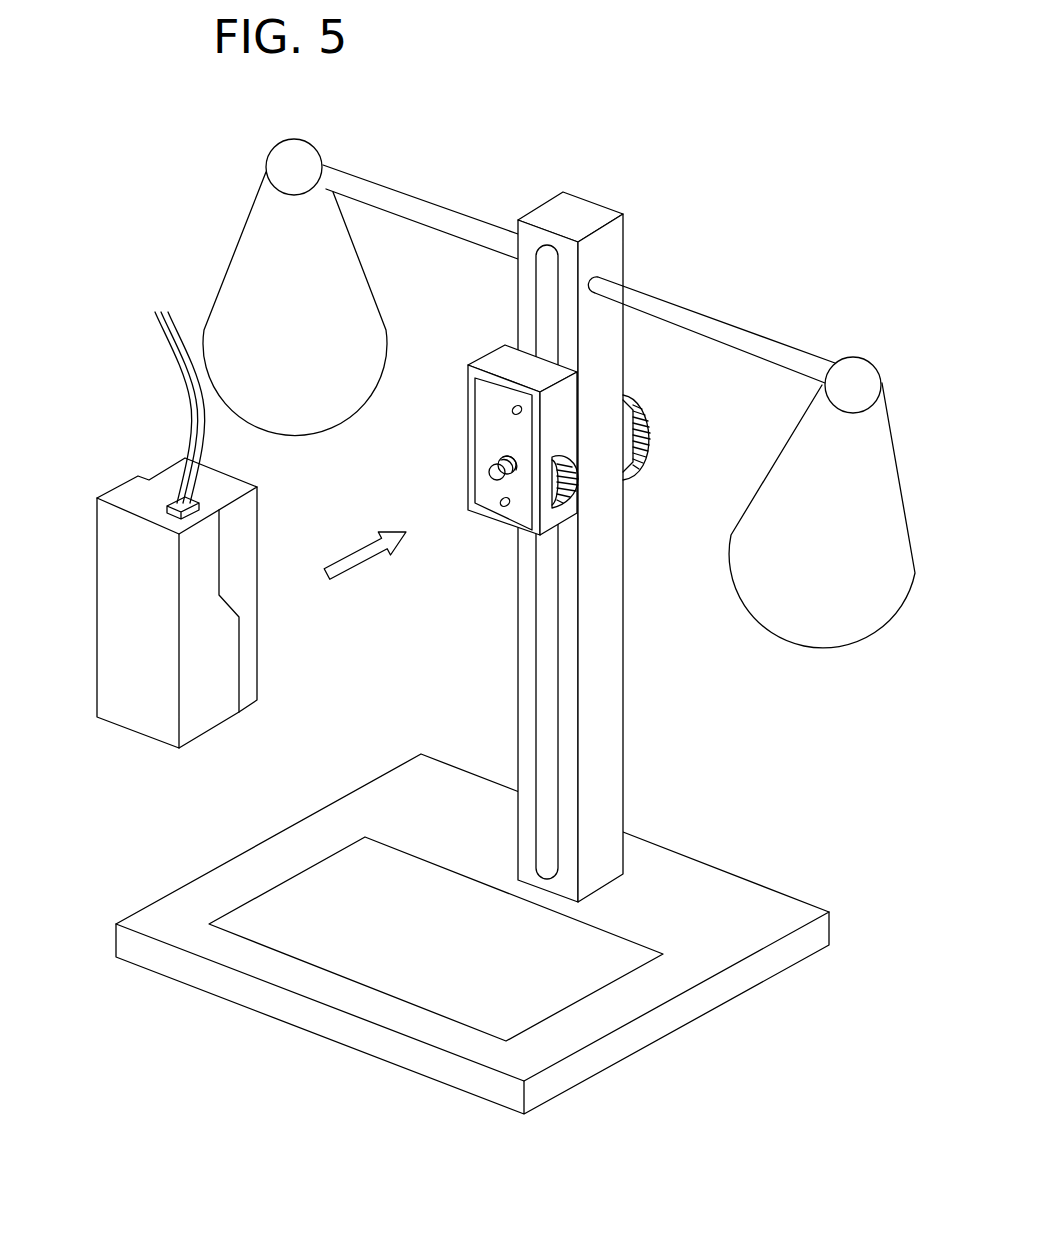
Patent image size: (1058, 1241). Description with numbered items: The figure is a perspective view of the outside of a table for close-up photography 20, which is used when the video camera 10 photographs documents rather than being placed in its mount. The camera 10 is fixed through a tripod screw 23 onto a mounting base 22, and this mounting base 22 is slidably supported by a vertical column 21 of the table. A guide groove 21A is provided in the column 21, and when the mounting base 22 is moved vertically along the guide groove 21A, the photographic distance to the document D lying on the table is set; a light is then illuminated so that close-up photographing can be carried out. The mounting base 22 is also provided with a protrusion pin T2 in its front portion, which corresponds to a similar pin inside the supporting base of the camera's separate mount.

The electronic device with connection cable 10 is at (118, 566).
The base plate 20 is at (665, 1023).
The support column 21 is at (557, 547).
The guide slot of support column 21A is at (543, 662).
The holder box 22 is at (505, 348).
The fixing screw 23 is at (496, 466).
The terminal T2 is at (512, 408).
The document placement area D is at (346, 968).